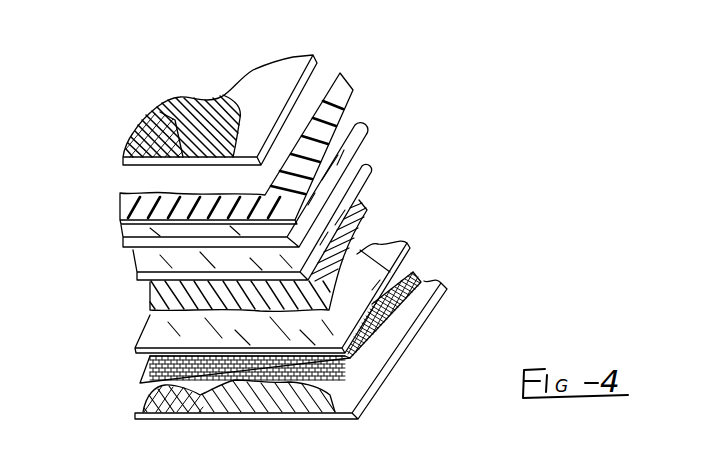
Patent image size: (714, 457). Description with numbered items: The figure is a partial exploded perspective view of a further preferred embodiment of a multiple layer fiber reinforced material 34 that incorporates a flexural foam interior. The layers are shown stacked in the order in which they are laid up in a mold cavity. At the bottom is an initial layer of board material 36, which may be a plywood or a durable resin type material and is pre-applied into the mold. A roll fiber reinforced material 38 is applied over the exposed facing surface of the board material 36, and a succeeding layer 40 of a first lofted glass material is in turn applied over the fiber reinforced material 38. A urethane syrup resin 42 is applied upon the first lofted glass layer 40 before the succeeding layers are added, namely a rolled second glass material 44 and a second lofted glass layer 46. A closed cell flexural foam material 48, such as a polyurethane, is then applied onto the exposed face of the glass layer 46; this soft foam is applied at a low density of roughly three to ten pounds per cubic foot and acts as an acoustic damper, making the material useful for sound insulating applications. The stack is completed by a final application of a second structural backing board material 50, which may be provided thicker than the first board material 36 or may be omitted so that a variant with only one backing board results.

The multiple layer fiber reinforced material 34 is at (93, 428).
The board material 36 is at (380, 391).
The roll fiber reinforced material 38 is at (413, 272).
The first lofted glass material layer 40 is at (405, 243).
The urethane syrup resin 42 is at (363, 207).
The rolled second glass material 44 is at (360, 166).
The second lofted glass layer 46 is at (353, 118).
The closed cell flexural foam material 48 is at (348, 80).
The second structural backing board material 50 is at (310, 54).